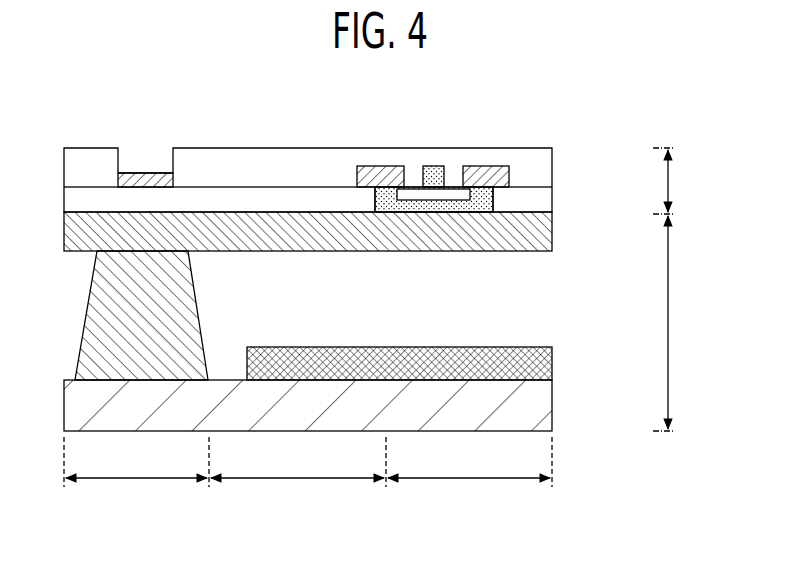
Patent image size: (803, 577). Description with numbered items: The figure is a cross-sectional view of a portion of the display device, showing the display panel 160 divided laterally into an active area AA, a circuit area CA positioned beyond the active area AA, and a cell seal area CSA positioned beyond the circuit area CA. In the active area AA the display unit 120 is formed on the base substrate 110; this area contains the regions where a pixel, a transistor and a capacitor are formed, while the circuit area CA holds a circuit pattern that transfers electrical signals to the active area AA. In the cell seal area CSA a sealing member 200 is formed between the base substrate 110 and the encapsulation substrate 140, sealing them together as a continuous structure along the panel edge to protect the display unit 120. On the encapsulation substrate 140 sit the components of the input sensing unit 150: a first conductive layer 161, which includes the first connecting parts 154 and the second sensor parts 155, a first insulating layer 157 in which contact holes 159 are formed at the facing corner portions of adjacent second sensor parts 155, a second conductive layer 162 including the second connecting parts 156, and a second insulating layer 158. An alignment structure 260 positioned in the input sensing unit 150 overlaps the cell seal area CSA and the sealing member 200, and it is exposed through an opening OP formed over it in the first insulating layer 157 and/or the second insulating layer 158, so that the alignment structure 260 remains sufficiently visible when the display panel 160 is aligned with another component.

The base substrate 110 is at (548, 410).
The display unit 120 is at (552, 358).
The encapsulation substrate 140 is at (548, 233).
The input sensing unit 150 is at (679, 181).
The first connecting parts 154 is at (433, 166).
The second sensor parts 155 is at (375, 166).
The second connecting parts 156 is at (433, 208).
The first insulating layer 157 is at (548, 206).
The second insulating layer 158 is at (548, 159).
The contact holes 159 is at (383, 193).
The display panel 160 is at (679, 323).
The first conductive layer 161 is at (493, 200).
The second conductive layer 162 is at (507, 180).
The sealing member 200 is at (195, 288).
The alignment structure 260 is at (150, 180).
The opening OP is at (140, 154).
The cell seal area CSA is at (136, 474).
The circuit area CA is at (298, 474).
The active area AA is at (470, 474).